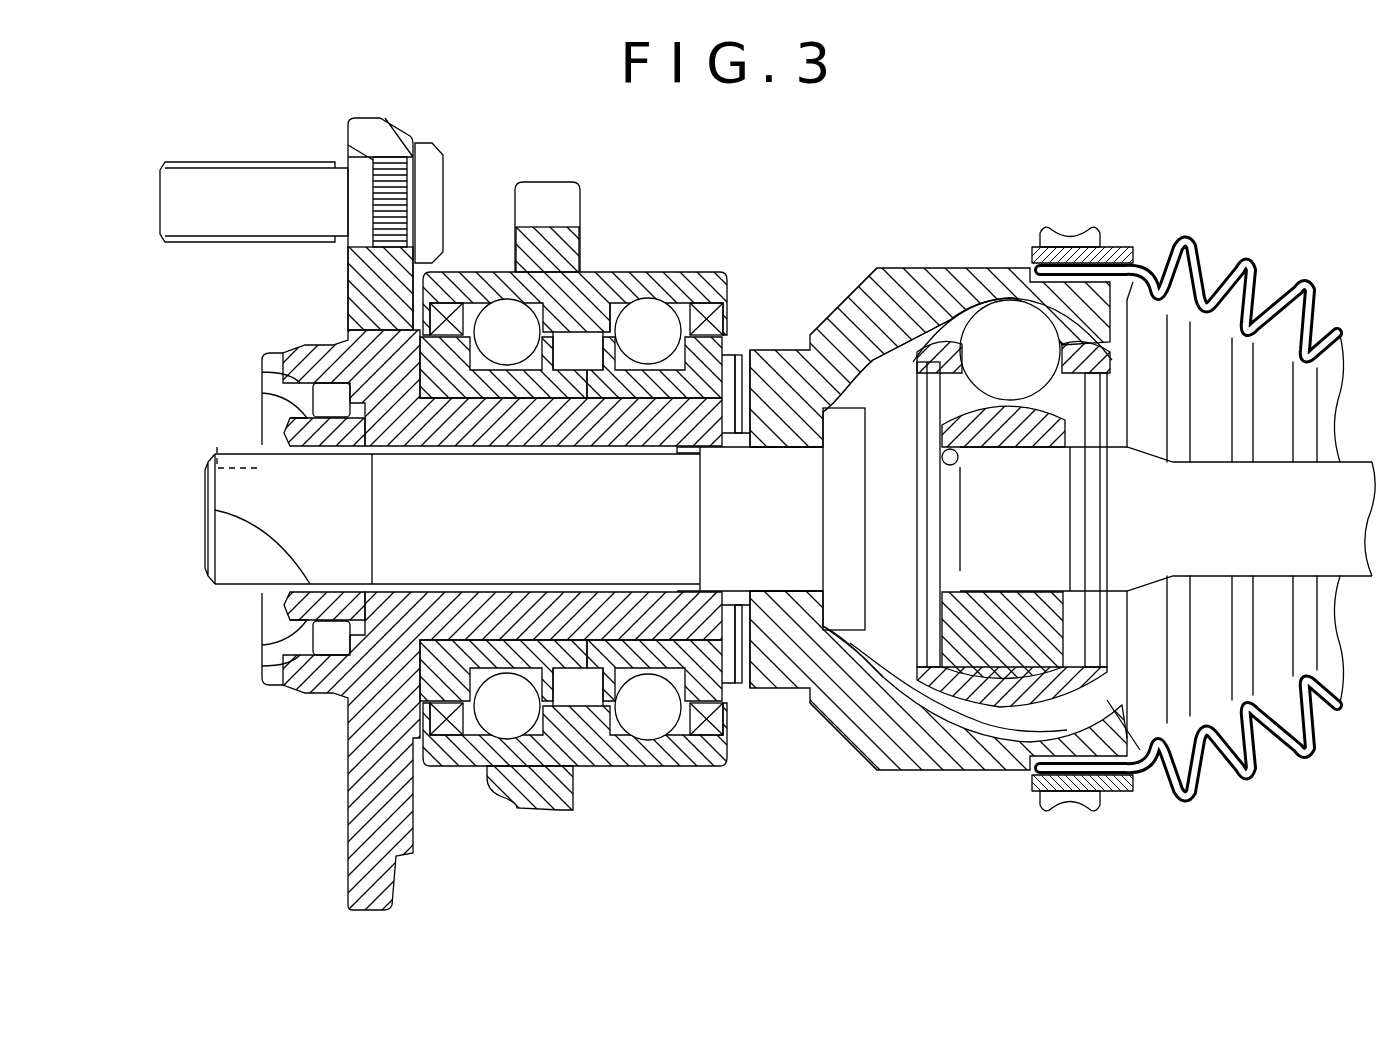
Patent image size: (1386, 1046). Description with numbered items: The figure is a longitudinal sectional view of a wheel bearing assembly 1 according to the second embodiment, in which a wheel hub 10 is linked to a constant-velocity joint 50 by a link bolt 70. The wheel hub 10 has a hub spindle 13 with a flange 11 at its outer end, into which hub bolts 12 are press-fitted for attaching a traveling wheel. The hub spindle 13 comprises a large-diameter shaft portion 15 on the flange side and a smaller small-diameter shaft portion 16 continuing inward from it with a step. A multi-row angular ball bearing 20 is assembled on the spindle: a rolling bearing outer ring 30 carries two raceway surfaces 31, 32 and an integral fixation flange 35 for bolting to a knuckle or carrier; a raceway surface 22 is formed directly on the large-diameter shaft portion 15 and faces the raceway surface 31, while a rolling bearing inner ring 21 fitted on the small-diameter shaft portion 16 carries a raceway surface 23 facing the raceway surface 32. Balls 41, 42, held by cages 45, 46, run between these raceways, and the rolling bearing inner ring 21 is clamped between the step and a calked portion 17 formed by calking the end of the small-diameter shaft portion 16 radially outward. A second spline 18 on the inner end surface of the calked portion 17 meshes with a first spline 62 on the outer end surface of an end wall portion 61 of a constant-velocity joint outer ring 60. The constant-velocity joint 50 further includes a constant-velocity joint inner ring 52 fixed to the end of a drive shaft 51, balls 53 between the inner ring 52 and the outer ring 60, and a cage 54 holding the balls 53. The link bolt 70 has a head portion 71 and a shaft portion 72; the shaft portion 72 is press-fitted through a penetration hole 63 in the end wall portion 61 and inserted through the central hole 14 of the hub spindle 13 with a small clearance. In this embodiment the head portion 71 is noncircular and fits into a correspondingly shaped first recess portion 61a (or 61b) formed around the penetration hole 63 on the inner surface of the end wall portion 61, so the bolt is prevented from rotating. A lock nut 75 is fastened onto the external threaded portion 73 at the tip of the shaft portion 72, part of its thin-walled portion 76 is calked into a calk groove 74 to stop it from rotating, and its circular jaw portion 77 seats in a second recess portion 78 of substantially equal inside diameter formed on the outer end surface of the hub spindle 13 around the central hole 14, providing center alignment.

The wheel bearing assembly 1 is at (1198, 168).
The wheel hub 10 is at (340, 778).
The flange 11 is at (380, 145).
The hub bolt 12 is at (236, 185).
The hub spindle 13 is at (567, 668).
The central hole 14 is at (437, 455).
The large-diameter shaft portion 15 is at (548, 420).
The small-diameter shaft portion 16 is at (628, 380).
The calked portion 17 is at (740, 355).
The second spline 18 is at (758, 352).
The multi-row angular ball bearing 20 is at (702, 290).
The rolling bearing inner ring 21 is at (737, 330).
The raceway surface 22 is at (500, 372).
The raceway surface 23 is at (668, 448).
The rolling bearing outer ring 30 is at (598, 290).
The raceway surface 31 is at (497, 317).
The raceway surface 32 is at (648, 310).
The fixation flange 35 is at (548, 195).
The ball 41 is at (497, 318).
The ball 42 is at (660, 302).
The cage 45 is at (508, 262).
The cage 46 is at (600, 300).
The constant-velocity joint 50 is at (945, 772).
The drive shaft 51 is at (1345, 470).
The constant-velocity joint inner ring 52 is at (1136, 262).
The ball 53 is at (1010, 335).
The cage 54 is at (930, 365).
The constant-velocity joint outer ring 60 is at (965, 268).
The end wall portion 61 is at (836, 330).
The first recess portion 61a is at (850, 397).
The first recess portion 61b is at (906, 498).
The first spline 62 is at (744, 380).
The penetration hole 63 is at (782, 452).
The link bolt 70 is at (530, 595).
The head portion 71 is at (857, 528).
The shaft portion 72 is at (641, 640).
The external threaded portion 73 is at (220, 568).
The calk groove 74 is at (215, 447).
The lock nut 75 is at (300, 392).
The thin-walled portion 76 is at (290, 420).
The circular jaw portion 77 is at (320, 645).
The second recess portion 78 is at (226, 560).